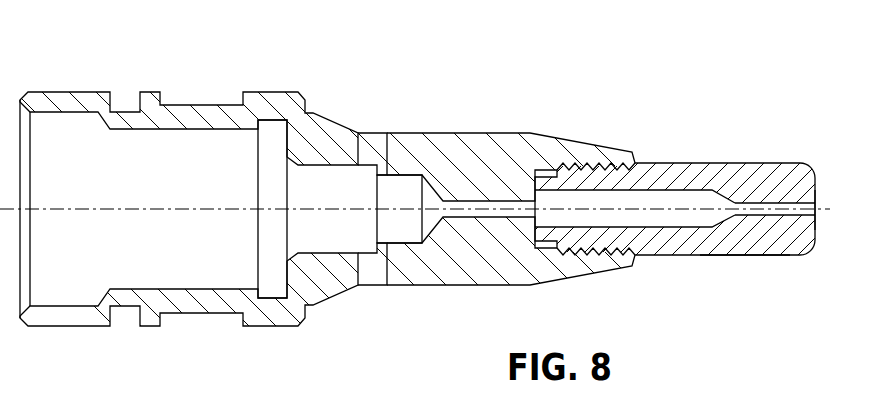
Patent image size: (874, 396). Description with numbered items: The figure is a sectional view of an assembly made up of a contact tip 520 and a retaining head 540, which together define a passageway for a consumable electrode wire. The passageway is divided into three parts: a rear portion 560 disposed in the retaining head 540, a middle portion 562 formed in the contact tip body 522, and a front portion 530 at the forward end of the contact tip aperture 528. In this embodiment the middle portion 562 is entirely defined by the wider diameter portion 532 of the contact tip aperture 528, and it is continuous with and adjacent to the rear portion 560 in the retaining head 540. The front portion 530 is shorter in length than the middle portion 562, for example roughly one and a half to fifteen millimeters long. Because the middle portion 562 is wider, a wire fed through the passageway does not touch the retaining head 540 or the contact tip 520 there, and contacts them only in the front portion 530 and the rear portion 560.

The contact tip 520 is at (789, 157).
The contact tip body 522 is at (740, 257).
The contact tip aperture 528 is at (814, 211).
The front portion 530 is at (770, 204).
The wider diameter portion 532 is at (636, 224).
The retaining head 540 is at (208, 103).
The rear portion 560 is at (448, 206).
The middle portion 562 is at (587, 200).